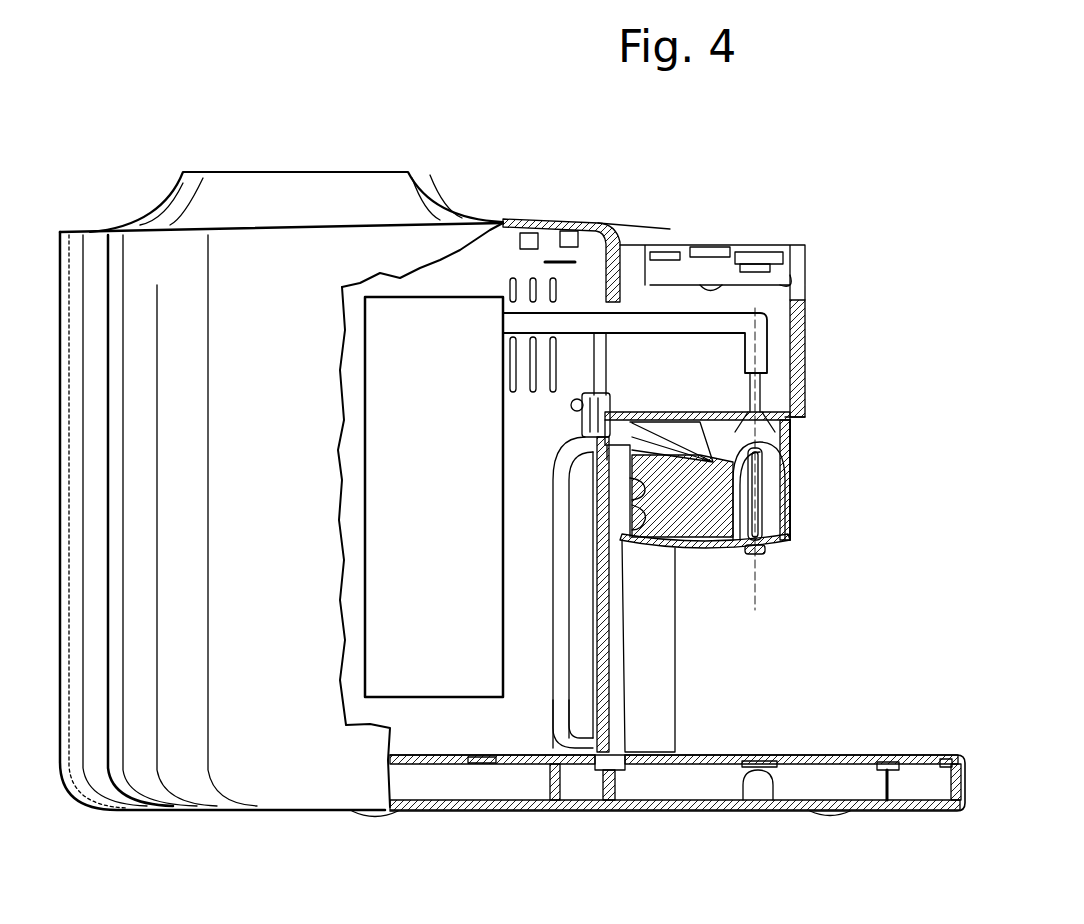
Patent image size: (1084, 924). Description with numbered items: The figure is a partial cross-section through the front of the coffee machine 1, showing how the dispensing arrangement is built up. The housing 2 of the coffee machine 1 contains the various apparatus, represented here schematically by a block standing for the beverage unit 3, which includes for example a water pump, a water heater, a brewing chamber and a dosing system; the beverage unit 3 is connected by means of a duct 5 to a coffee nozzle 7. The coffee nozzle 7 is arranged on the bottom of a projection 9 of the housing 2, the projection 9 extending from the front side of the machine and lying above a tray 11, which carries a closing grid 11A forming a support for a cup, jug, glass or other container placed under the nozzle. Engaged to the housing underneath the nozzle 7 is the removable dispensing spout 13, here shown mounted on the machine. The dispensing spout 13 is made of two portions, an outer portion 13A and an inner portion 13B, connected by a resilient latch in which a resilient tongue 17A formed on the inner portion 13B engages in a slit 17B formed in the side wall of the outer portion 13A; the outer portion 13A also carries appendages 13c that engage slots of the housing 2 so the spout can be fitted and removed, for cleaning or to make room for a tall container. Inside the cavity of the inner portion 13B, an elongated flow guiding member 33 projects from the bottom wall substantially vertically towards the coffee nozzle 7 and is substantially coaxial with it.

The coffee machine 1 is at (706, 205).
The housing 2 is at (57, 268).
The beverage unit 3 is at (437, 482).
The duct 5 is at (681, 340).
The coffee nozzle 7 is at (760, 433).
The projection 9 is at (788, 322).
The tray 11 is at (915, 780).
The closing grid 11A is at (727, 757).
The dispensing spout 13 is at (800, 492).
The outer portion 13A is at (707, 550).
The inner portion 13B is at (668, 548).
The appendages 13c is at (622, 425).
The resilient tongue 17A is at (645, 517).
The slit 17B is at (640, 503).
The elongated flow guiding member 33 is at (758, 517).